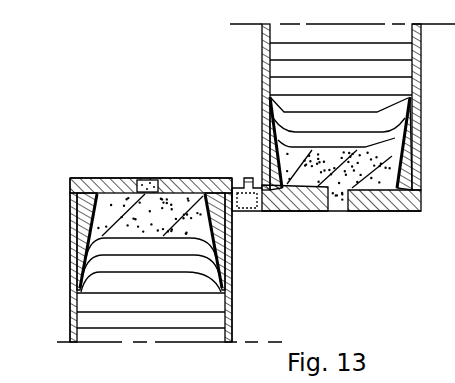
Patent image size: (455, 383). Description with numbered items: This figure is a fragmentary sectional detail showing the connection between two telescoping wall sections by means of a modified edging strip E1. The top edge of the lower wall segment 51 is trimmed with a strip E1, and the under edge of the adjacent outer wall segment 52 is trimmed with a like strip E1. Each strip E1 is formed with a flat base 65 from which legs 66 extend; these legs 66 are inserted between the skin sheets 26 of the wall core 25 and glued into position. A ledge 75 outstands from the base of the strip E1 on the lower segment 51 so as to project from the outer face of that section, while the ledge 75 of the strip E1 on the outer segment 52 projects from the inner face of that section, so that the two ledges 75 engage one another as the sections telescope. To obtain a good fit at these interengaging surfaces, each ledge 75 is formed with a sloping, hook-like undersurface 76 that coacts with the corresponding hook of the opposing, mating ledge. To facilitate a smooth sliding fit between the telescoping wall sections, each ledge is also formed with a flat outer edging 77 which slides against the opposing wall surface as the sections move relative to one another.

The wall core 25 is at (113, 330).
The skin sheets 26 is at (70, 312).
The lower wall segment 51 is at (225, 230).
The outer wall segment 52 is at (332, 135).
The flat base 65 is at (158, 180).
The legs 66 is at (80, 252).
The ledge 75 is at (241, 191).
The sloping hook-like undersurface 76 is at (231, 170).
The flat outer edging 77 is at (268, 212).
The edging strip E1 is at (245, 196).